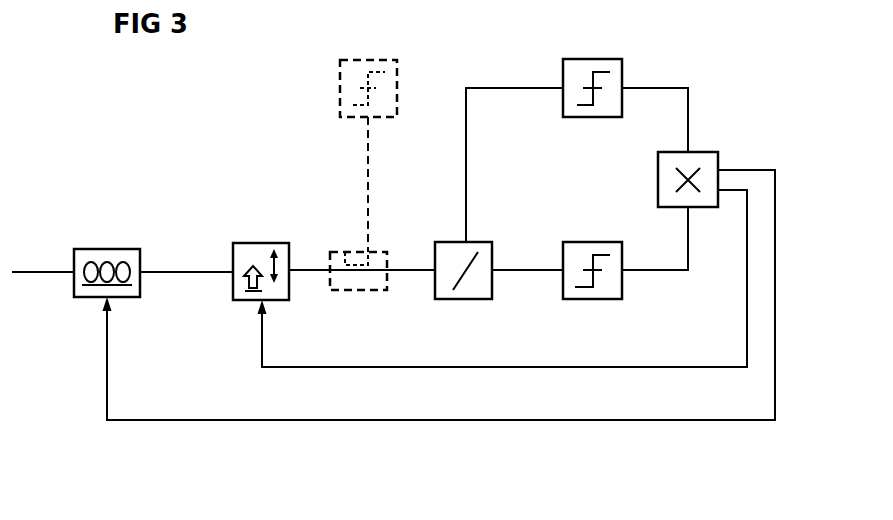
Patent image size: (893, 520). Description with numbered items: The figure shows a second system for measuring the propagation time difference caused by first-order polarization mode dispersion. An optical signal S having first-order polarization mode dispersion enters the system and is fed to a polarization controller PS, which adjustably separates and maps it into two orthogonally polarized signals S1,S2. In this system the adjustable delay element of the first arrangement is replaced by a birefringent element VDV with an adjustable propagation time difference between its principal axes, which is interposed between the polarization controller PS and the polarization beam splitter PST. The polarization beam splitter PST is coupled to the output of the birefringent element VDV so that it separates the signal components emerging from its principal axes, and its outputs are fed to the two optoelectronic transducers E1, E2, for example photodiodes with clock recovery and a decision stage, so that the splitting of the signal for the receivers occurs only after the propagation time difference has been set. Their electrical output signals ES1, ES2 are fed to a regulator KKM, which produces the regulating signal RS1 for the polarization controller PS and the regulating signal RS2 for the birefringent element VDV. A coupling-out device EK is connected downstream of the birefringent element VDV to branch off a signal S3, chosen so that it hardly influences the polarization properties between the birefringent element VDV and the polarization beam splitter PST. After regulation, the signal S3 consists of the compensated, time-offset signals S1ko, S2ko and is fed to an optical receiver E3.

The polarization controller PS is at (107, 248).
The birefringent element VDV is at (262, 242).
The optical receiver E3 is at (373, 60).
The coupling-out device EK is at (372, 291).
The polarization beam splitter PST is at (467, 300).
The optoelectronic transducer E1 is at (592, 241).
The optoelectronic transducer E2 is at (592, 58).
The regulator KKM is at (703, 151).
The optical signal S is at (48, 262).
The orthogonally polarized signals S1,S2 is at (208, 258).
The compensated signal S1ko is at (543, 260).
The compensated signal S2ko is at (455, 172).
The signal S3 is at (358, 145).
The electrical output signal ES1 is at (661, 259).
The electrical output signal ES2 is at (671, 78).
The regulating signal RS1 is at (565, 409).
The regulating signal RS2 is at (603, 357).